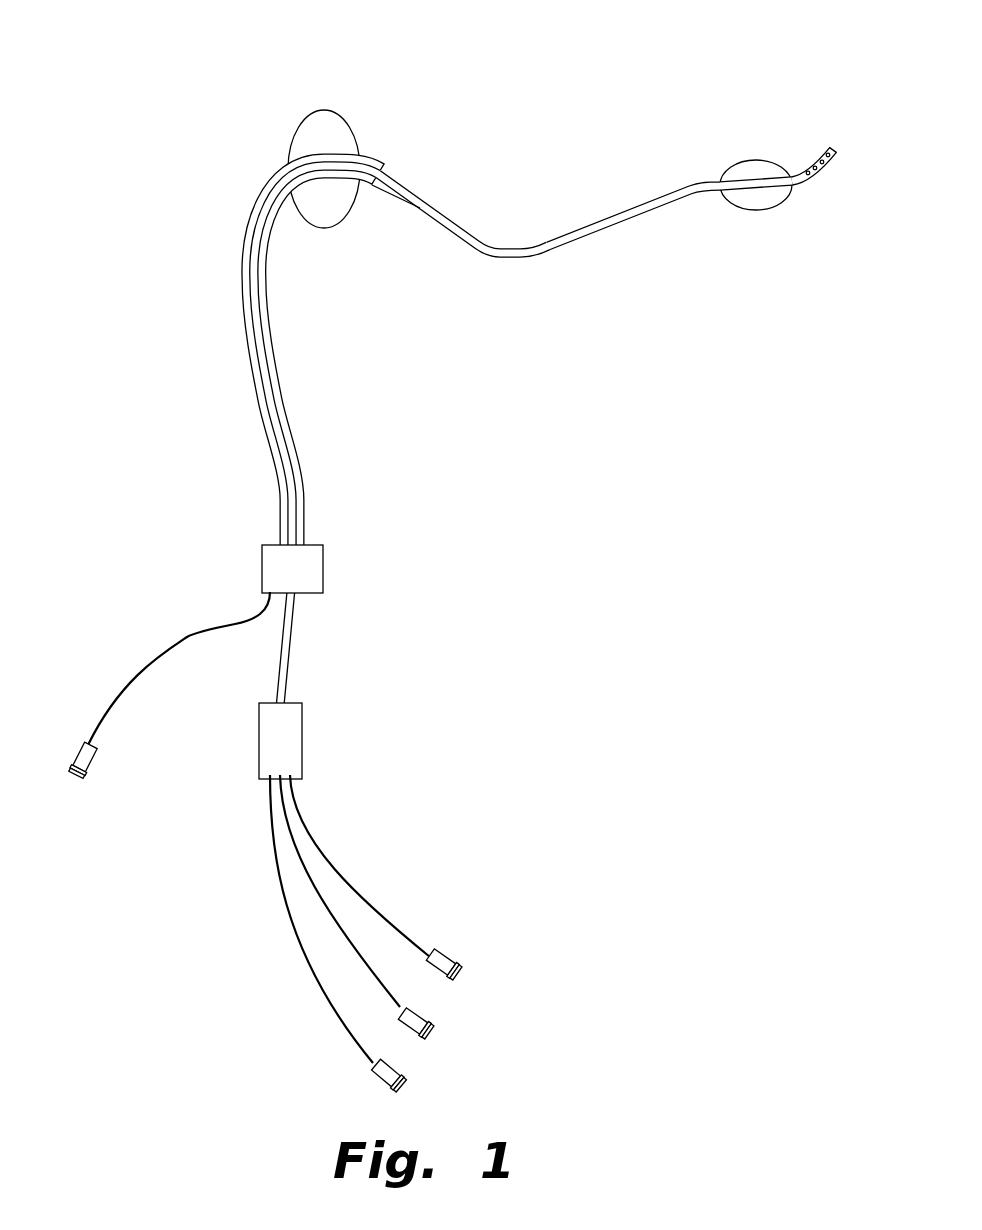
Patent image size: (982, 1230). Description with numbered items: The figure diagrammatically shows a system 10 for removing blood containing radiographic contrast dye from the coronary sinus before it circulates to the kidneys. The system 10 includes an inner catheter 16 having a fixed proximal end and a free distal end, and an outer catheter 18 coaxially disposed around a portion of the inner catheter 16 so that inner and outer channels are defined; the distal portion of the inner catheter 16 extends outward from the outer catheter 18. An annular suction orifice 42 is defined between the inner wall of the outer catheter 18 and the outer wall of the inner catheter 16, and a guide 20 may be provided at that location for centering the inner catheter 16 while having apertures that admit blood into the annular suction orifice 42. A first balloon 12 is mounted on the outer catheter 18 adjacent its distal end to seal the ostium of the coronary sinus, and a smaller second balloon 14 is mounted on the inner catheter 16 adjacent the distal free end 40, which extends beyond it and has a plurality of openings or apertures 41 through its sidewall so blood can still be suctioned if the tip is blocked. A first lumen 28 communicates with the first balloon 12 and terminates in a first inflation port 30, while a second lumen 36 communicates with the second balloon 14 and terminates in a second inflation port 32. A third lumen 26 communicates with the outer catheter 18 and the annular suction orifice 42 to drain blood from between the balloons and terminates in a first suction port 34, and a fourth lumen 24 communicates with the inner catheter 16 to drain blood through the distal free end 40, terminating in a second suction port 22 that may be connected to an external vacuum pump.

The system for removing blood containing radiographic contrast media 10 is at (612, 85).
The first balloon 12 is at (321, 110).
The second balloon 14 is at (736, 166).
The inner catheter 16 is at (571, 246).
The outer catheter 18 is at (247, 362).
The guide 20 is at (423, 188).
The second suction port 22 is at (63, 740).
The fourth lumen 24 is at (187, 634).
The third lumen 26 is at (317, 1004).
The first lumen 28 is at (343, 878).
The first inflation port 30 is at (446, 955).
The second inflation port 32 is at (431, 1010).
The first suction port 34 is at (370, 1076).
The second lumen 36 is at (369, 980).
The distal free end 40 is at (832, 163).
The openings or apertures 41 is at (836, 192).
The annular suction orifice 42 is at (419, 219).